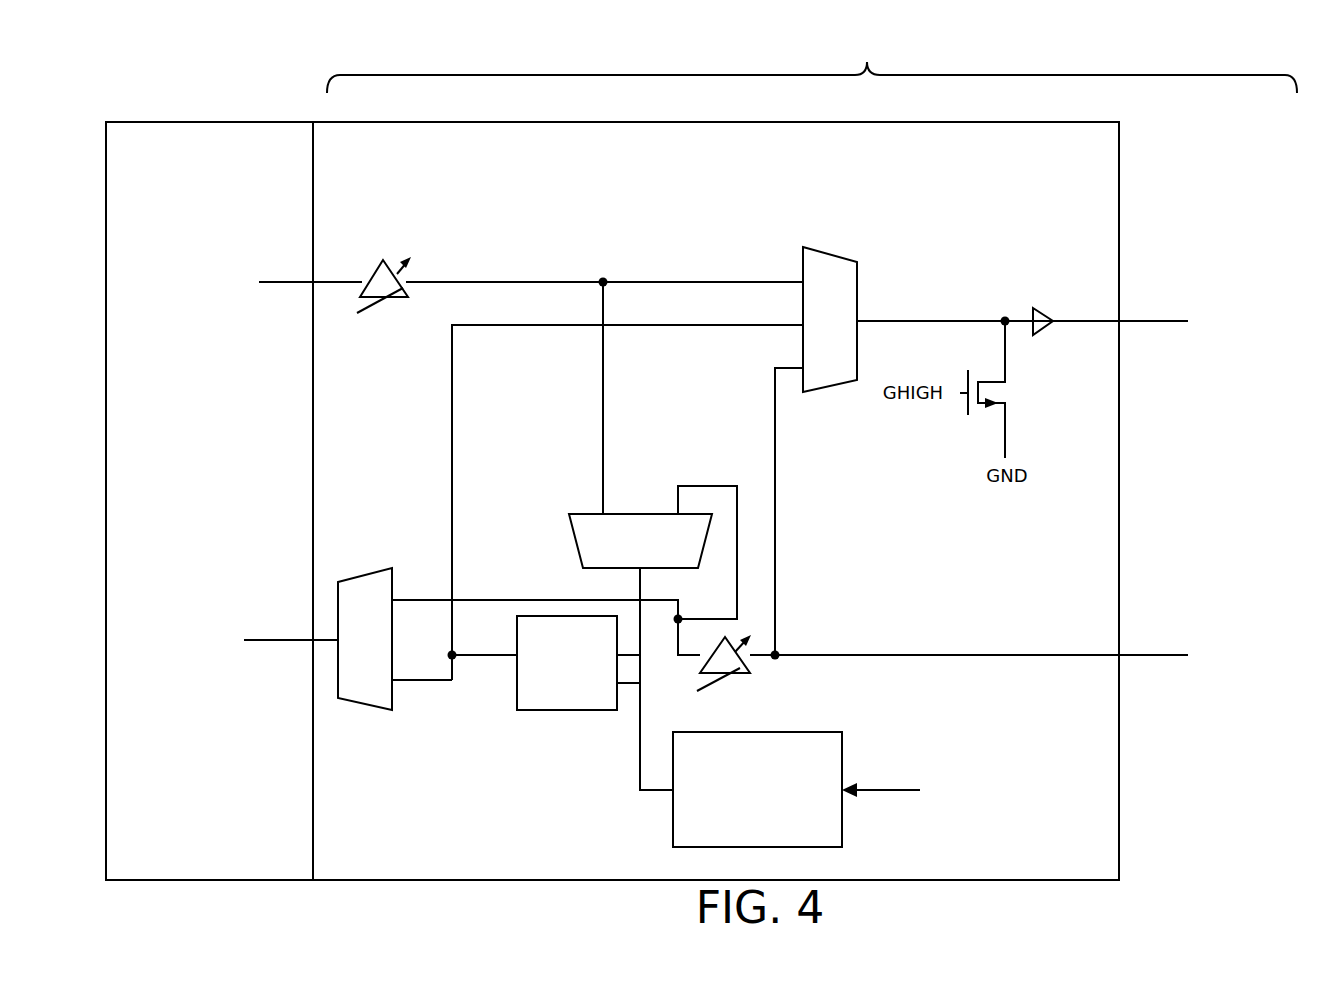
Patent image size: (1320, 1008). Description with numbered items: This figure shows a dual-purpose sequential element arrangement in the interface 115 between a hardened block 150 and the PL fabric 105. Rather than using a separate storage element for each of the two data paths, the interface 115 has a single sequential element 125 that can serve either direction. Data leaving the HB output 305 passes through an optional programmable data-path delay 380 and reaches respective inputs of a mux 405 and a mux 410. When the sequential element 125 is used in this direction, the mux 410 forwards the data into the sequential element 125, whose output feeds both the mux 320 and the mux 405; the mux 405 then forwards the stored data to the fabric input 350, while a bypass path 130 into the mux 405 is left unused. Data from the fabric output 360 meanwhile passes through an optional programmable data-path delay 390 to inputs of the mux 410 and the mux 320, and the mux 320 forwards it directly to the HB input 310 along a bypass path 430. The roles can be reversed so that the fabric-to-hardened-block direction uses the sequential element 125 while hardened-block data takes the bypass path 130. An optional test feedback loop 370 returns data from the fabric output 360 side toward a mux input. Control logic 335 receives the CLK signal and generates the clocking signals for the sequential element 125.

The PL fabric 105 is at (812, 48).
The interface 115 is at (1055, 200).
The sequential element 125 is at (592, 712).
The bypass path 130 is at (710, 282).
The hardened block 150 is at (226, 498).
The HB output 305 is at (261, 279).
The HB input 310 is at (249, 620).
The mux 320 is at (365, 568).
The control logic 335 is at (735, 830).
The fabric input 350 is at (1058, 319).
The fabric output 360 is at (1016, 651).
The test feedback loop 370 is at (775, 512).
The programmable data-path delay 380 is at (398, 300).
The programmable data-path delay 390 is at (738, 676).
The mux 405 is at (832, 247).
The mux 410 is at (641, 514).
The bypass path 430 is at (510, 600).